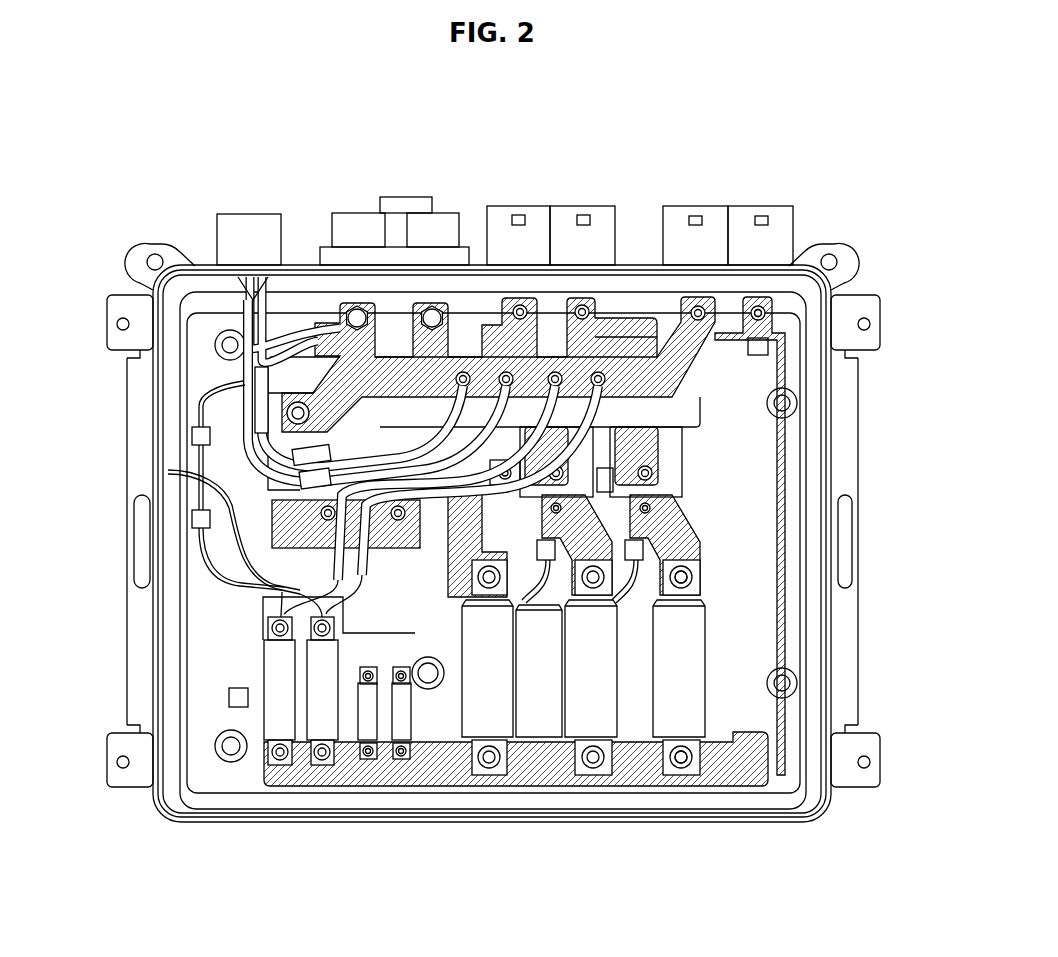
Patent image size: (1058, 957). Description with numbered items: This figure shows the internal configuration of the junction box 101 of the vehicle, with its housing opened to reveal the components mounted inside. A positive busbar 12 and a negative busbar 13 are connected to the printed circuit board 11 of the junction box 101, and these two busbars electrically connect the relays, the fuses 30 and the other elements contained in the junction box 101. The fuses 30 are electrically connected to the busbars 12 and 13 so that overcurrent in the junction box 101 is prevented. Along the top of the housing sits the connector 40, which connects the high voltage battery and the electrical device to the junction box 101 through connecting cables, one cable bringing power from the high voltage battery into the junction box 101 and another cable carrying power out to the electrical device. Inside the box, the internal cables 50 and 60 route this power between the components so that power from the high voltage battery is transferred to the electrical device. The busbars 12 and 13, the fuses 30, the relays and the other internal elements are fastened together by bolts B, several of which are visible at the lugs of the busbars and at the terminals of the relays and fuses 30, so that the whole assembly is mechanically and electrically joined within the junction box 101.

The junction box 101 is at (852, 187).
The printed circuit board 11 is at (740, 466).
The positive busbar 12 is at (760, 497).
The negative busbar 13 is at (680, 360).
The fuses 30 is at (690, 646).
The connector 40 is at (683, 212).
The internal cable 50 is at (250, 388).
The internal cable 60 is at (218, 588).
The bolts B is at (699, 302).